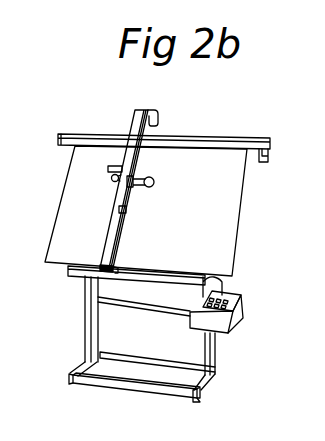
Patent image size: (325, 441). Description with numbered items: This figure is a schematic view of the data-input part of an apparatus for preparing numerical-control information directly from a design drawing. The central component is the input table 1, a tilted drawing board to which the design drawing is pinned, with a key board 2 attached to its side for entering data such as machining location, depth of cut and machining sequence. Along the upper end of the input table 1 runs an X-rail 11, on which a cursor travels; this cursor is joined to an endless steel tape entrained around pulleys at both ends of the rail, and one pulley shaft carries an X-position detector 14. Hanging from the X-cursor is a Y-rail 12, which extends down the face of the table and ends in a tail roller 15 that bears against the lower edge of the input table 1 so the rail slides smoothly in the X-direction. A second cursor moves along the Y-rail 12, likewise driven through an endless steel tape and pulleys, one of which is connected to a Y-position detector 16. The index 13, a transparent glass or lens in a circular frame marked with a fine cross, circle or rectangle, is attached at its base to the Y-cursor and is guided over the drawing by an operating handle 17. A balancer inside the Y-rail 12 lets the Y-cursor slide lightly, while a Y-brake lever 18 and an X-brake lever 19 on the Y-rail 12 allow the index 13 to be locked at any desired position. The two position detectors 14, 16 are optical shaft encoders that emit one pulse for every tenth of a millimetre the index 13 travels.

The input table 1 is at (59, 235).
The key board 2 is at (232, 298).
The X-rail 11 is at (206, 140).
The Y-rail 12 is at (134, 122).
The index 13 is at (154, 183).
The X-position detector 14 is at (269, 152).
The tail roller 15 is at (112, 273).
The Y-position detector 16 is at (151, 112).
The operating handle 17 is at (111, 178).
The Y-brake lever 18 is at (108, 169).
The X-brake lever 19 is at (126, 210).